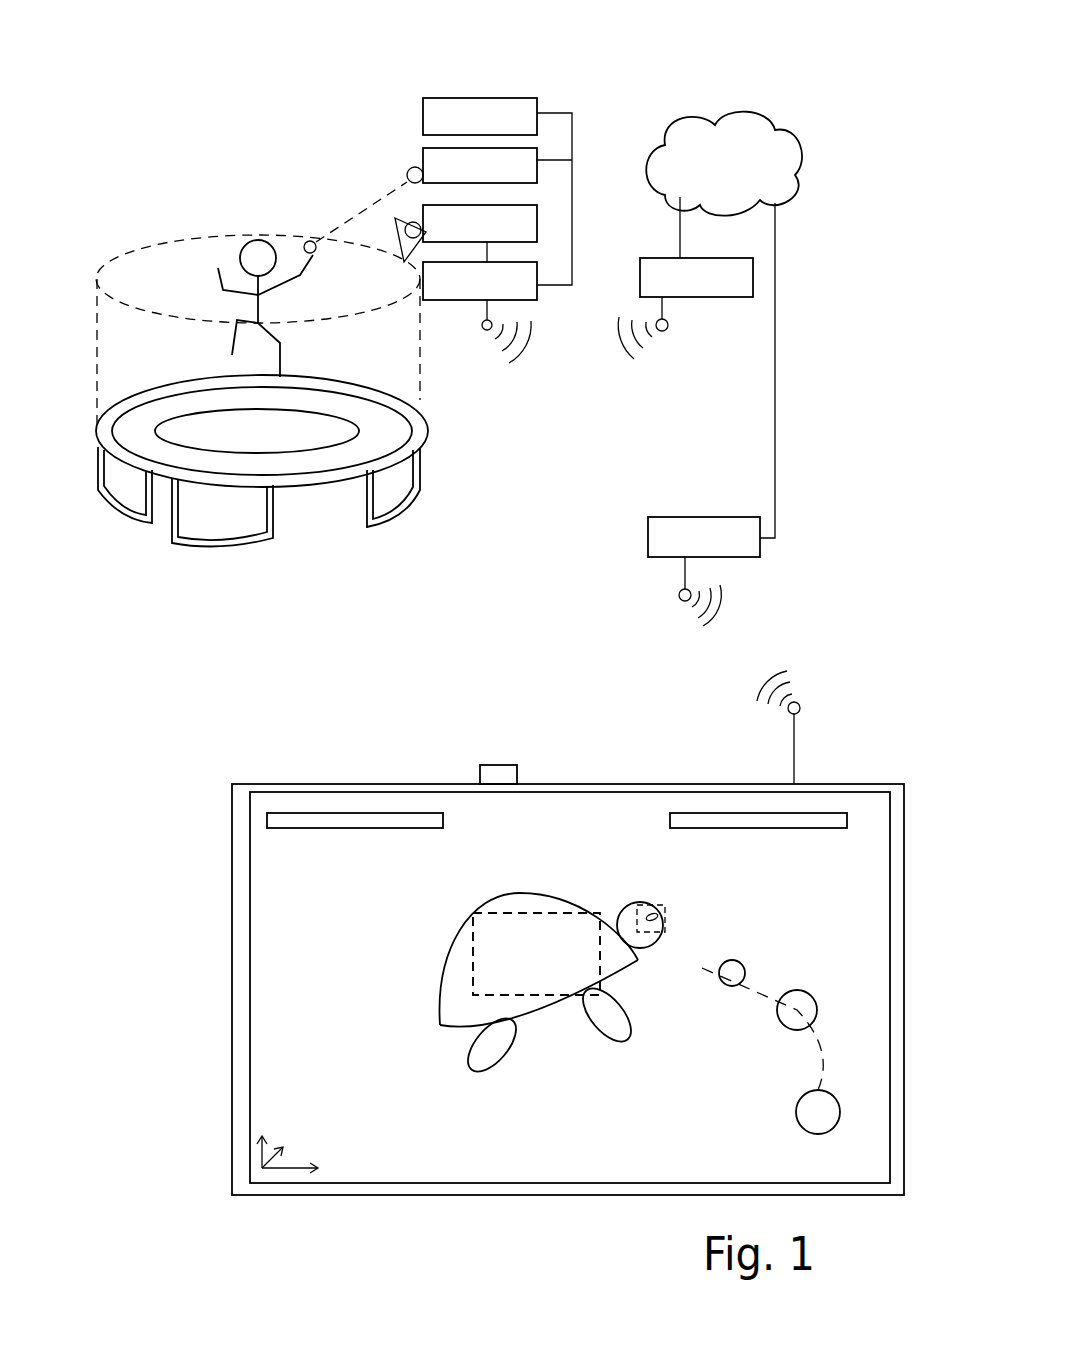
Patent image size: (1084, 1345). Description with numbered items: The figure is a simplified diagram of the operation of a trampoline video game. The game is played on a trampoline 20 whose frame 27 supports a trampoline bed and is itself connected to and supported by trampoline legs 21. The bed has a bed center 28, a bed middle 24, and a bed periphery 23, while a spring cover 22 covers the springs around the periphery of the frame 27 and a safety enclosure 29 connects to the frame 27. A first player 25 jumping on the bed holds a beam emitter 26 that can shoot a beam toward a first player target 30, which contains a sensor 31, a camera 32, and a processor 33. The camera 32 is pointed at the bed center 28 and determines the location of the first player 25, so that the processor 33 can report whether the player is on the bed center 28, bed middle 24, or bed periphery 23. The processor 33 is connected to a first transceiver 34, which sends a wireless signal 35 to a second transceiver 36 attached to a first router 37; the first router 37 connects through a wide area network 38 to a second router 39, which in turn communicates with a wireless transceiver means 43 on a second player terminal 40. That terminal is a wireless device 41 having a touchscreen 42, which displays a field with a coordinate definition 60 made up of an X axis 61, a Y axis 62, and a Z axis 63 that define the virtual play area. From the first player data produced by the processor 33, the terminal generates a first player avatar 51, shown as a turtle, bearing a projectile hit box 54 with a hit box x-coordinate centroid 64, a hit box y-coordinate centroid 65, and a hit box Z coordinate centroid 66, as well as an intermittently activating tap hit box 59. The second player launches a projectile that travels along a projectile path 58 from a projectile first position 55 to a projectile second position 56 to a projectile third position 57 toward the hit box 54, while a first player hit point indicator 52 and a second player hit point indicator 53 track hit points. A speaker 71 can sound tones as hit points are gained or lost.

The trampoline 20 is at (217, 138).
The trampoline legs 21 is at (270, 530).
The spring cover 22 is at (133, 405).
The bed periphery 23 is at (377, 428).
The bed middle 24 is at (300, 423).
The first player 25 is at (236, 258).
The beam emitter 26 is at (307, 241).
The frame 27 is at (315, 488).
The bed center 28 is at (257, 433).
The safety enclosure 29 is at (110, 250).
The first player target 30 is at (512, 73).
The sensor 31 is at (472, 165).
The camera 32 is at (466, 233).
The processor 33 is at (523, 285).
The first transceiver 34 is at (481, 327).
The wireless signal 35 is at (527, 358).
The second transceiver 36 is at (667, 332).
The first router 37 is at (743, 267).
The wide area network 38 is at (748, 135).
The second router 39 is at (753, 533).
The second player terminal 40 is at (293, 770).
The wireless device 41 is at (393, 783).
The touchscreen 42 is at (307, 945).
The wireless transceiver means 43 is at (807, 702).
The first player avatar 51 is at (458, 978).
The first player hit point indicator 52 is at (285, 823).
The second player hit point indicator 53 is at (832, 822).
The projectile hit box 54 is at (530, 898).
The projectile first position 55 is at (815, 1115).
The projectile second position 56 is at (803, 1002).
The projectile third position 57 is at (728, 985).
The projectile path 58 is at (820, 1050).
The tap hit box 59 is at (652, 903).
The coordinate definition 60 is at (235, 1163).
The X axis 61 is at (325, 1167).
The Y axis 62 is at (262, 1123).
The Z axis 63 is at (292, 1147).
The hit box x-coordinate centroid 64 is at (510, 948).
The hit box y-coordinate centroid 65 is at (491, 942).
The hit box Z coordinate centroid 66 is at (507, 942).
The speaker 71 is at (493, 775).